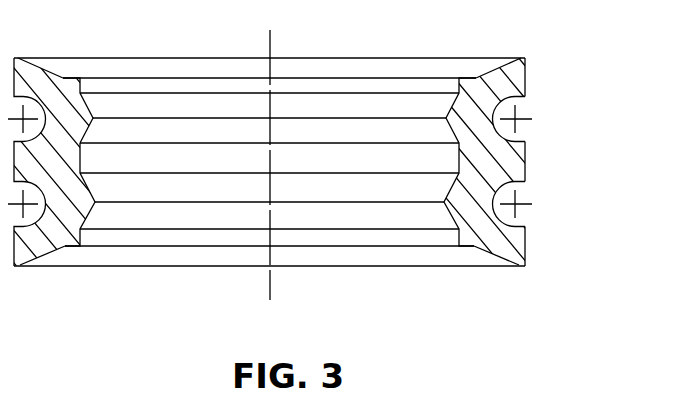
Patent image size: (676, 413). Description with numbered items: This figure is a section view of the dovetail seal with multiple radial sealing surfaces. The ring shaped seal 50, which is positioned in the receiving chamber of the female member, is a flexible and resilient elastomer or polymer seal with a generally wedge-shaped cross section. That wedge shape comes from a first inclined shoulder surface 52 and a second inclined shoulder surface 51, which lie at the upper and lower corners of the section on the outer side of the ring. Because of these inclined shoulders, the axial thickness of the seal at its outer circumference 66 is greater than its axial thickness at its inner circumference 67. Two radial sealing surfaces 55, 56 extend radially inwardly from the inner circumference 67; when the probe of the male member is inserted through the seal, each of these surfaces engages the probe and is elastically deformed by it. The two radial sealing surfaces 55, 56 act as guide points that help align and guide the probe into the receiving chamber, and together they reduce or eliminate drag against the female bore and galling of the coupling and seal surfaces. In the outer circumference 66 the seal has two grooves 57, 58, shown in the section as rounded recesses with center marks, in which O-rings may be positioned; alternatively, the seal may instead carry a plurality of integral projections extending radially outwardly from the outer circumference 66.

The ring shaped seal 50 is at (502, 88).
The second inclined shoulder surface 51 is at (47, 70).
The first inclined shoulder surface 52 is at (20, 257).
The radial sealing surface 55 is at (80, 143).
The radial sealing surface 56 is at (86, 185).
The groove 57 is at (518, 116).
The groove 58 is at (518, 203).
The outer circumference 66 is at (524, 162).
The inner circumference 67 is at (461, 183).